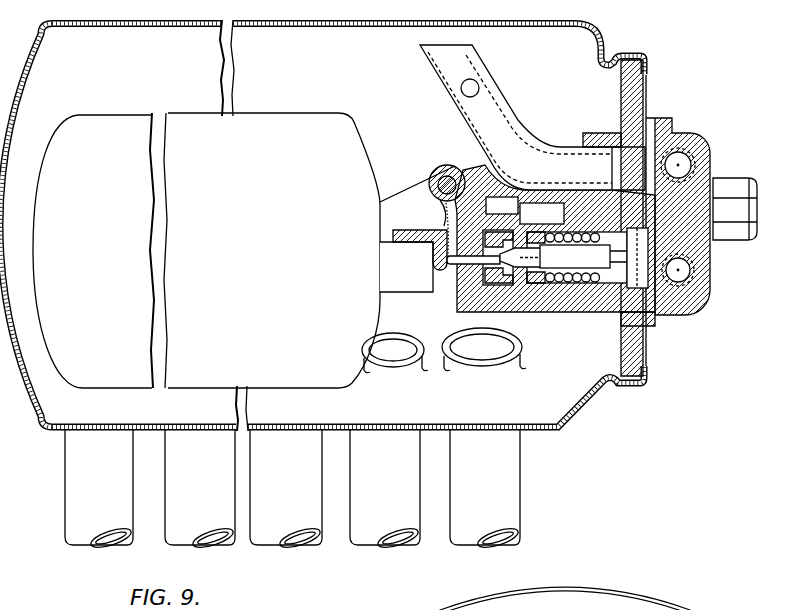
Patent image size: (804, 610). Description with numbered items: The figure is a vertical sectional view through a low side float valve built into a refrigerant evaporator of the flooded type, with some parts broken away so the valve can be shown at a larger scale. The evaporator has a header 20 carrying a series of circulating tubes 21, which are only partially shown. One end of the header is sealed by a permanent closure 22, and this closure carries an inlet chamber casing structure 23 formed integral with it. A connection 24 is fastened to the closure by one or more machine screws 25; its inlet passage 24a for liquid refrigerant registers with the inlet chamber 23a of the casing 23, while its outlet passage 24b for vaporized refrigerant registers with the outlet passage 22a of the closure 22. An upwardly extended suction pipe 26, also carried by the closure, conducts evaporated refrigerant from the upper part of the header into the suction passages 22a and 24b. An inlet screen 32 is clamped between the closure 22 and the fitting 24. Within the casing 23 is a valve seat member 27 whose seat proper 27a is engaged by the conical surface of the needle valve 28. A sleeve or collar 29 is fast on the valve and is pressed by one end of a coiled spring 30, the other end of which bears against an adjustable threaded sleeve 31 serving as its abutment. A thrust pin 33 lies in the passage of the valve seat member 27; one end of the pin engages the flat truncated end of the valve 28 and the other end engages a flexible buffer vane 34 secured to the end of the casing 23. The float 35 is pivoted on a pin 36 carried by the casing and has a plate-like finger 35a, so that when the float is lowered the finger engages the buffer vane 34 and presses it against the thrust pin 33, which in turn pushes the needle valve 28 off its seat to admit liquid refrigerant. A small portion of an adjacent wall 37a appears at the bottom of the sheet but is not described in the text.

The header 20 is at (596, 410).
The circulating tubes 21 is at (358, 522).
The permanent closure 22 is at (645, 350).
The outlet passage 22a is at (624, 162).
The inlet chamber casing structure 23 is at (578, 332).
The inlet chamber 23a is at (630, 322).
The connection 24 is at (700, 300).
The inlet passage 24a is at (688, 272).
The outlet passage 24b is at (685, 158).
The machine screws 25 is at (735, 186).
The suction pipe 26 is at (497, 86).
The valve seat member 27 is at (502, 230).
The seat proper 27a is at (547, 232).
The needle valve 28 is at (518, 288).
The sleeve or collar 29 is at (538, 306).
The coiled spring 30 is at (572, 298).
The adjustable threaded sleeve 31 is at (612, 300).
The inlet screen 32 is at (664, 318).
The thrust pin 33 is at (468, 306).
The flexible buffer vane 34 is at (413, 198).
The float 35 is at (252, 132).
The plate-like finger 35a is at (437, 276).
The pivot pin 36 is at (447, 172).
The casing wall 37a is at (741, 609).